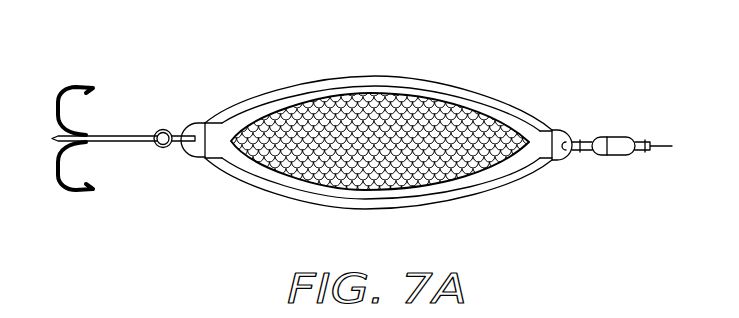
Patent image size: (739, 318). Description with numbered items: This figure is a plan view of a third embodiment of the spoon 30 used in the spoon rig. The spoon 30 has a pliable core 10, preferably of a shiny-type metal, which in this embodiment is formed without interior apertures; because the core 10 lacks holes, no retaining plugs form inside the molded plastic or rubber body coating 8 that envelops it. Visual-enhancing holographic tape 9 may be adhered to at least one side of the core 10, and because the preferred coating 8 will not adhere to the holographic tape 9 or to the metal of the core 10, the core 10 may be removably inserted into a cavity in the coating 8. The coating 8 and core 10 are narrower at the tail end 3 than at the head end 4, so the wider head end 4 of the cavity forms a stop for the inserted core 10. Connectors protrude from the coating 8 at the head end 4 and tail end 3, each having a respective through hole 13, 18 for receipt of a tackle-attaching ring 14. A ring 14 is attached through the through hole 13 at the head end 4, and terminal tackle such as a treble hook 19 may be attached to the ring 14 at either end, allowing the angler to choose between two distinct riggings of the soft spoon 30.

The tail end 3 is at (459, 212).
The head end 4 is at (226, 76).
The body coating 8 is at (495, 180).
The holographic tape 9 is at (343, 103).
The core 10 is at (408, 95).
The through hole 13 is at (193, 126).
The ring 14 is at (180, 143).
The through hole 18 is at (562, 162).
The treble hook 19 is at (68, 84).
The spoon 30 is at (556, 100).